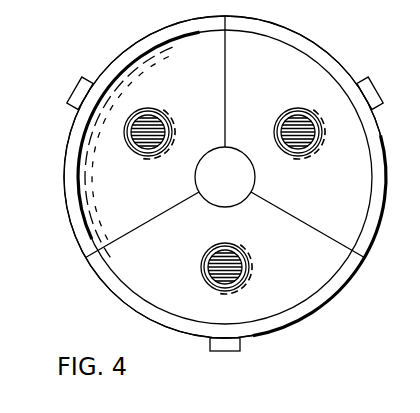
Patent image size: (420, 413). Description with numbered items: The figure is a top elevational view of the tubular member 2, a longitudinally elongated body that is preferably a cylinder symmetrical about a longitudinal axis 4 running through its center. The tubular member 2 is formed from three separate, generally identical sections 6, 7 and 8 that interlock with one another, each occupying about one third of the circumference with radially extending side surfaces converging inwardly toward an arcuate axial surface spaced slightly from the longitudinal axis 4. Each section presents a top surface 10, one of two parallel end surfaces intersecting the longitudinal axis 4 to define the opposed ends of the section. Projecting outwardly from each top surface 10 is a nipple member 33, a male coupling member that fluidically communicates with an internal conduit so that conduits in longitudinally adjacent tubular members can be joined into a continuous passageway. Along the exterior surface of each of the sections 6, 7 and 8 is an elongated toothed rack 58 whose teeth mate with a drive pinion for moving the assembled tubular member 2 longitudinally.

The tubular member 2 is at (74, 113).
The longitudinal axis 4 is at (238, 182).
The section 6 is at (39, 0).
The section 7 is at (337, 52).
The section 8 is at (310, 318).
The top surface 10 is at (315, 276).
The nipple member 33 is at (298, 108).
The toothed rack 58 is at (86, 76).